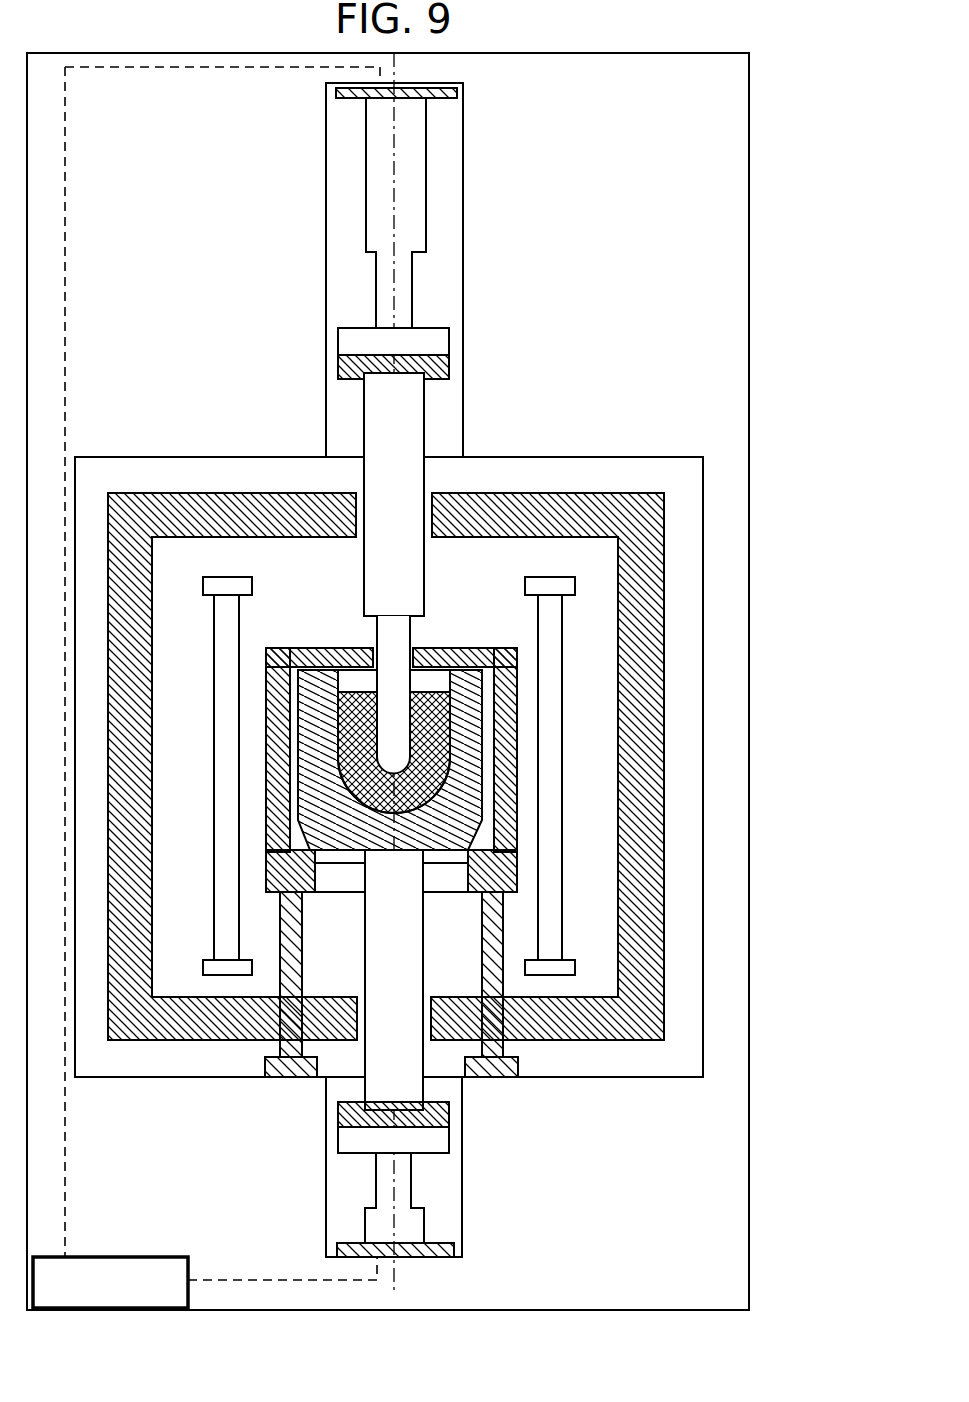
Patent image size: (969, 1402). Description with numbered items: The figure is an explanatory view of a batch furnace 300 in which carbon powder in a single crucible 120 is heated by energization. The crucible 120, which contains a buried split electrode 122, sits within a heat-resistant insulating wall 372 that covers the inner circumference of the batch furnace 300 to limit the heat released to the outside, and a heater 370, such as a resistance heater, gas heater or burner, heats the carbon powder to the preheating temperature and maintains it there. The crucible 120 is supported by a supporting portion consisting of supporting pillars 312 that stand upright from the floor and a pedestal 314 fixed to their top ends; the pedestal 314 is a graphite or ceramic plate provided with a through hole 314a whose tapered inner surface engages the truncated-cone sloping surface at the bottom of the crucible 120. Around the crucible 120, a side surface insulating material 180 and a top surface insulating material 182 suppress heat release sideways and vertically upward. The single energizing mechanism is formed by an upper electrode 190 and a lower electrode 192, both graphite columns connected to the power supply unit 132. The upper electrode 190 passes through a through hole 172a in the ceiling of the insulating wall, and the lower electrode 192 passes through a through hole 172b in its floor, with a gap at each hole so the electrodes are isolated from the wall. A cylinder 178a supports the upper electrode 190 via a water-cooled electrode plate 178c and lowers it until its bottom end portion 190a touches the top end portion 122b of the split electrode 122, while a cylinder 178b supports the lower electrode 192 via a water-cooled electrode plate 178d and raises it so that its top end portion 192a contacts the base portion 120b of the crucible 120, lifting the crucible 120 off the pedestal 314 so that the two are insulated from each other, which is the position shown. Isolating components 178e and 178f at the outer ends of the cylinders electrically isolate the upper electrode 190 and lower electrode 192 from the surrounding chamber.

The batch furnace 300 is at (88, 53).
The power supply unit 132 is at (103, 1257).
The isolating component 178e is at (457, 93).
The cylinder 178a is at (426, 175).
The water-cooled electrode plate 178c is at (449, 368).
The upper electrode 190 is at (364, 407).
The through hole 172a is at (434, 493).
The through hole 172b is at (425, 1042).
The insulating wall 372 is at (310, 537).
The heater 370 is at (239, 640).
The bottom end portion 190a is at (377, 618).
The split electrode 122 is at (373, 645).
The top end portion 122b is at (410, 618).
The top surface insulating material 182 is at (484, 648).
The side surface insulating material 180 is at (517, 740).
The crucible 120 is at (298, 767).
The base portion 120b is at (377, 855).
The pedestal 314 is at (266, 863).
The through hole 314a is at (452, 875).
The supporting pillars 312 is at (302, 940).
The lower electrode 192 is at (364, 1095).
The top end portion 192a is at (417, 850).
The water-cooled electrode plate 178d is at (449, 1113).
The cylinder 178b is at (424, 1225).
The isolating component 178f is at (454, 1250).